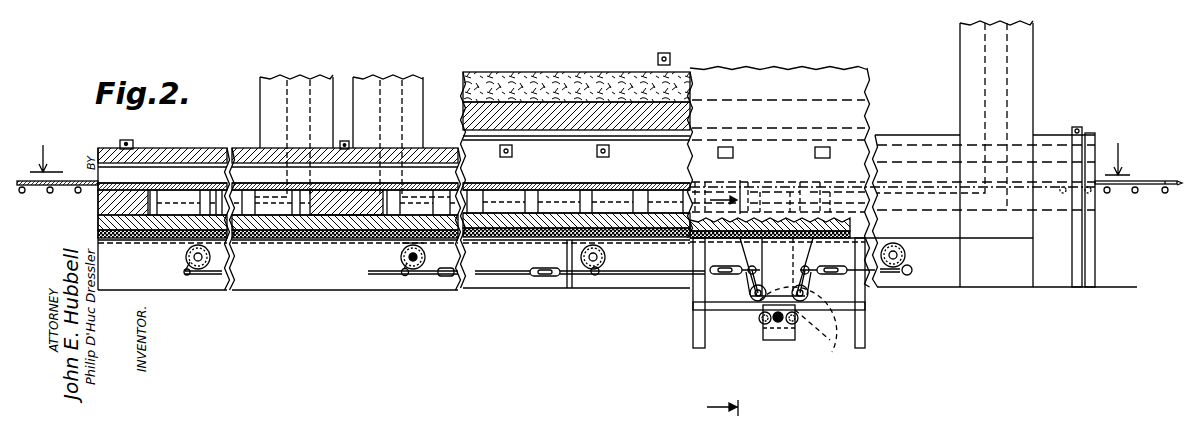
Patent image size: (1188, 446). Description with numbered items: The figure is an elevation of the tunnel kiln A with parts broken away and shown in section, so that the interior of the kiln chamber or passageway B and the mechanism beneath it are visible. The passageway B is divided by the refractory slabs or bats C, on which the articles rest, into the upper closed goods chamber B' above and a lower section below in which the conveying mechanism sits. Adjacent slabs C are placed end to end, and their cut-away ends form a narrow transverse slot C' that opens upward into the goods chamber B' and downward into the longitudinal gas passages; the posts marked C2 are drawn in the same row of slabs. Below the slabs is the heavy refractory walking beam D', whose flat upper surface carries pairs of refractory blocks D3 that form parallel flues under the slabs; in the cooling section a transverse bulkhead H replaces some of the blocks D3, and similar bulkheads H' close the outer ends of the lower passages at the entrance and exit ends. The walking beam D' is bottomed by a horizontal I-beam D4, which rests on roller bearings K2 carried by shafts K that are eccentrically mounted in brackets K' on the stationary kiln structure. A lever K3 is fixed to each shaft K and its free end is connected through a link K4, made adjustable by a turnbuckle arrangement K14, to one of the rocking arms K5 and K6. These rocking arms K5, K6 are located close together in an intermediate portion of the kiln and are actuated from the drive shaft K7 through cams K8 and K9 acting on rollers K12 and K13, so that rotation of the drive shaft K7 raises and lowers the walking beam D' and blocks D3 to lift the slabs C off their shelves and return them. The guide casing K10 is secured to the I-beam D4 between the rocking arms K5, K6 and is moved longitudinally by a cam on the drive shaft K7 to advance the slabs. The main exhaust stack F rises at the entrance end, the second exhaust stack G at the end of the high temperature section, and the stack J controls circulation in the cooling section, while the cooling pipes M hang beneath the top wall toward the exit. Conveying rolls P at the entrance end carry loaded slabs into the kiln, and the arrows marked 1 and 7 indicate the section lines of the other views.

The pipes M is at (174, 166).
The kiln chamber or passageway B is at (345, 151).
The upper closed goods chamber B' is at (576, 118).
The tunnel kiln A is at (626, 74).
The stack J is at (254, 78).
The second exhaust stack G is at (370, 78).
The main exhaust stack F is at (960, 40).
The refractory slabs or bats C is at (818, 184).
The transverse slot C' is at (578, 186).
The supporting post C2 is at (640, 205).
The transverse bulkhead H is at (339, 230).
The bulkheads H' is at (104, 202).
The walking beam section D' is at (345, 244).
The refractory blocks D3 is at (507, 204).
The I-beam D4 is at (340, 238).
The shafts K is at (405, 273).
The brackets K' is at (391, 266).
The roller bearings K2 is at (452, 270).
The lever K3 is at (408, 276).
The links K4 is at (496, 274).
The rocking arm K5 is at (750, 280).
The rocking arm K6 is at (808, 282).
The drive shaft K7 is at (778, 332).
The cam K8 is at (782, 322).
The cam K9 is at (768, 331).
The guide casing K10 is at (776, 269).
The roller K12 is at (762, 324).
The roller K13 is at (804, 330).
The turnbuckle arrangement K14 is at (544, 276).
The conveying rolls P is at (38, 206).
The section line 1 is at (581, 159).
The section line 7 is at (722, 300).